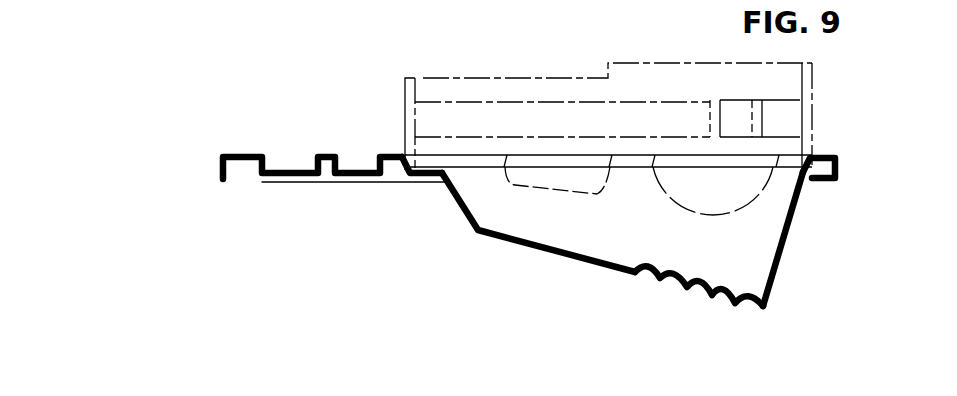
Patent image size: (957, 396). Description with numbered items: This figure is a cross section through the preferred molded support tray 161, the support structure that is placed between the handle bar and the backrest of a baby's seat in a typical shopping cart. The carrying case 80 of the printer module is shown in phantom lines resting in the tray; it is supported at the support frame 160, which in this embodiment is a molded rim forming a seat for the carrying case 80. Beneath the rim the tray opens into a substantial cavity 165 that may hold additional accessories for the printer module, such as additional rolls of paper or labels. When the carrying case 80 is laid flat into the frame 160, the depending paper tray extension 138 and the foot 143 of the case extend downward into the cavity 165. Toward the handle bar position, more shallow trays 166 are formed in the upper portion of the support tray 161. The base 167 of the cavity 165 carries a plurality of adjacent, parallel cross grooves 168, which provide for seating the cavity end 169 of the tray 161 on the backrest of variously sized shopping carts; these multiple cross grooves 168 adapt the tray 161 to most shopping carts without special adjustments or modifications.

The carrying case 80 is at (553, 78).
The paper tray extension 138 is at (711, 215).
The foot 143 is at (597, 196).
The support frame 160 is at (397, 157).
The support tray 161 is at (293, 219).
The cavity 165 is at (508, 228).
The shallow trays 166 is at (284, 160).
The base 167 is at (633, 257).
The cross grooves 168 is at (748, 303).
The cavity end 169 is at (790, 251).